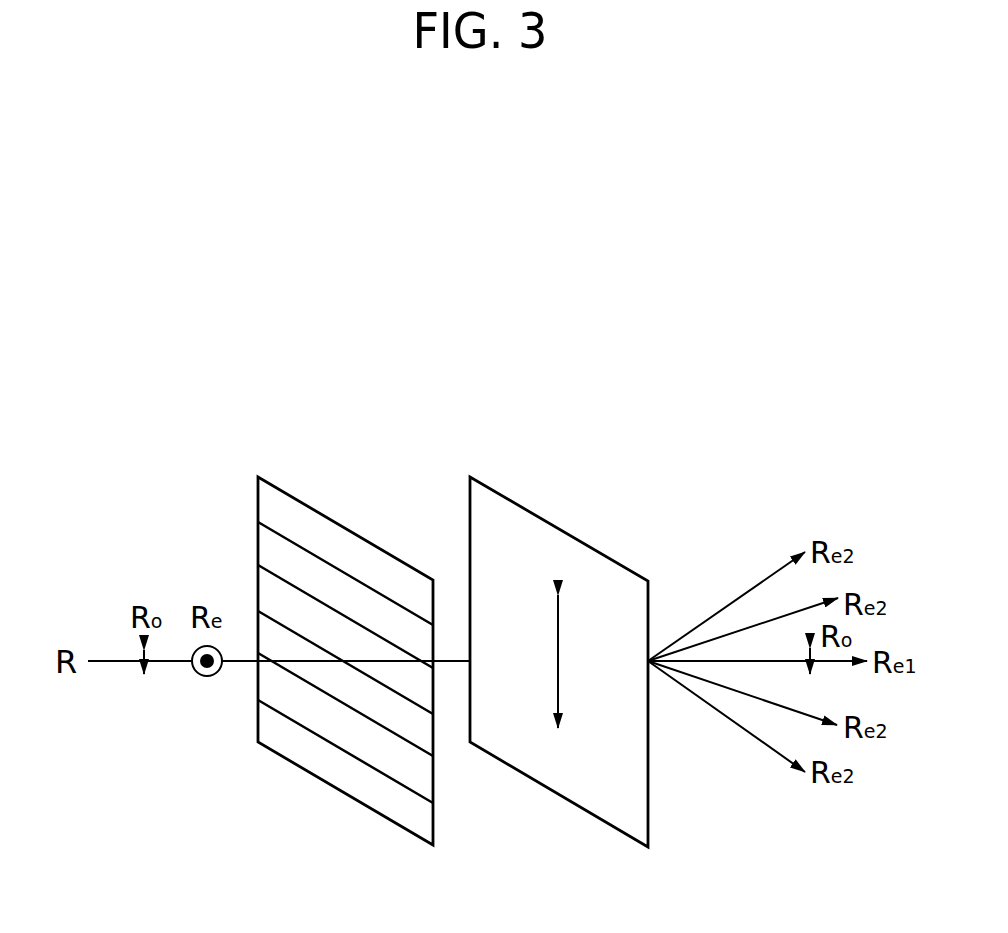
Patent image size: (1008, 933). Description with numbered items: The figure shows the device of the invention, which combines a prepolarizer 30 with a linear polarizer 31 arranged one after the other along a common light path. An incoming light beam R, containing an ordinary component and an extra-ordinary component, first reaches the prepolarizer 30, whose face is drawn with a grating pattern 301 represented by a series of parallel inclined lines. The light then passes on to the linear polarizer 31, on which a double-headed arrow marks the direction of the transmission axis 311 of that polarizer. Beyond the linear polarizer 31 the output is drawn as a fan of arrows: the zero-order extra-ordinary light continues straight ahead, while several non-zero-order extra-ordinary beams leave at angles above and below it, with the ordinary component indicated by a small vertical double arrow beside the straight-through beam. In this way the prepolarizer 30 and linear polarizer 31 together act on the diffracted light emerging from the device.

The prepolarizer 30 is at (345, 648).
The grating pattern 301 is at (337, 748).
The linear polarizer 31 is at (559, 637).
The transmission axis direction 311 is at (557, 690).